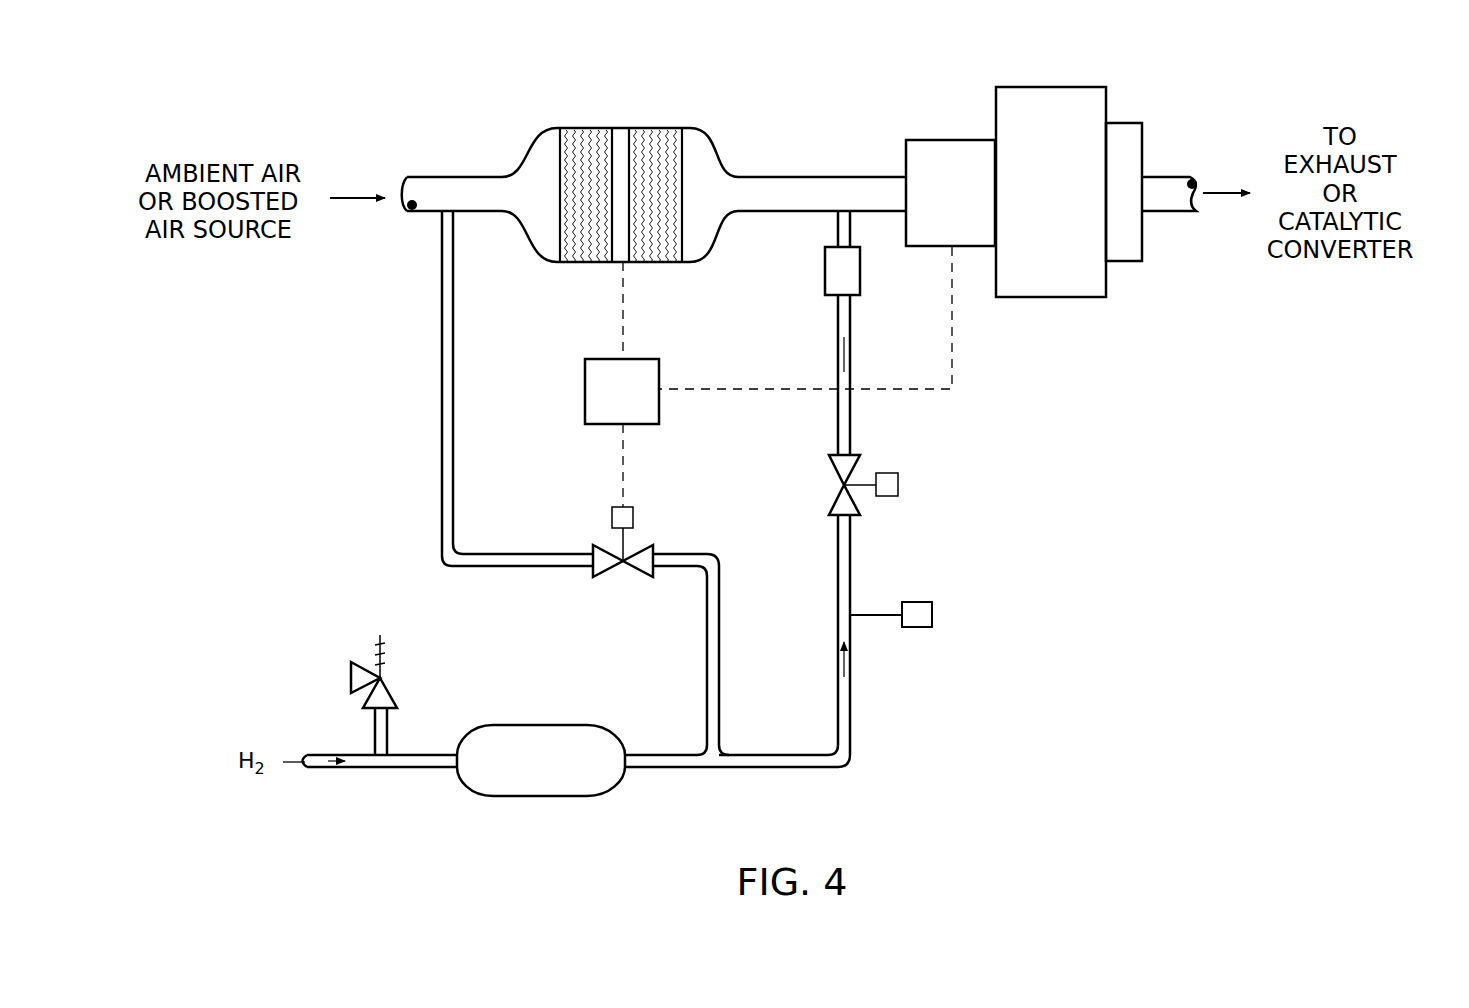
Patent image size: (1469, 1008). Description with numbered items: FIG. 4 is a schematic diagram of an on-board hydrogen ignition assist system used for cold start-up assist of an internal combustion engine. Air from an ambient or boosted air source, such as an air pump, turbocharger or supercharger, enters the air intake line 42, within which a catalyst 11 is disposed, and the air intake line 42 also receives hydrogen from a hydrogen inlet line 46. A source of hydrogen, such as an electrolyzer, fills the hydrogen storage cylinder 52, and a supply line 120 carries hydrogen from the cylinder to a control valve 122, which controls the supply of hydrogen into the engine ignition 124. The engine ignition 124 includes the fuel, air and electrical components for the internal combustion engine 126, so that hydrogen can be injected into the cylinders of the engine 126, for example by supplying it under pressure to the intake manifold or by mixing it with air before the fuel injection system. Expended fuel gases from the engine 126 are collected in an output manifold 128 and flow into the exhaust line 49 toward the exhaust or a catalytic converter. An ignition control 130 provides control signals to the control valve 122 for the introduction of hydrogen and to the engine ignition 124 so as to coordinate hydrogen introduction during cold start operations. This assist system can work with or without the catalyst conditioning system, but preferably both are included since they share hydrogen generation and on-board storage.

The air intake line 42 is at (472, 176).
The catalyst 11 is at (718, 146).
The engine ignition 124 is at (930, 139).
The internal combustion engine 126 is at (1070, 207).
The output manifold 128 is at (1140, 262).
The exhaust line 49 is at (1183, 172).
The hydrogen inlet line 46 is at (836, 224).
The ignition control 130 is at (659, 424).
The control valve 122 is at (630, 570).
The bypass line 120 is at (706, 628).
The hydrogen storage cylinder 52 is at (525, 724).